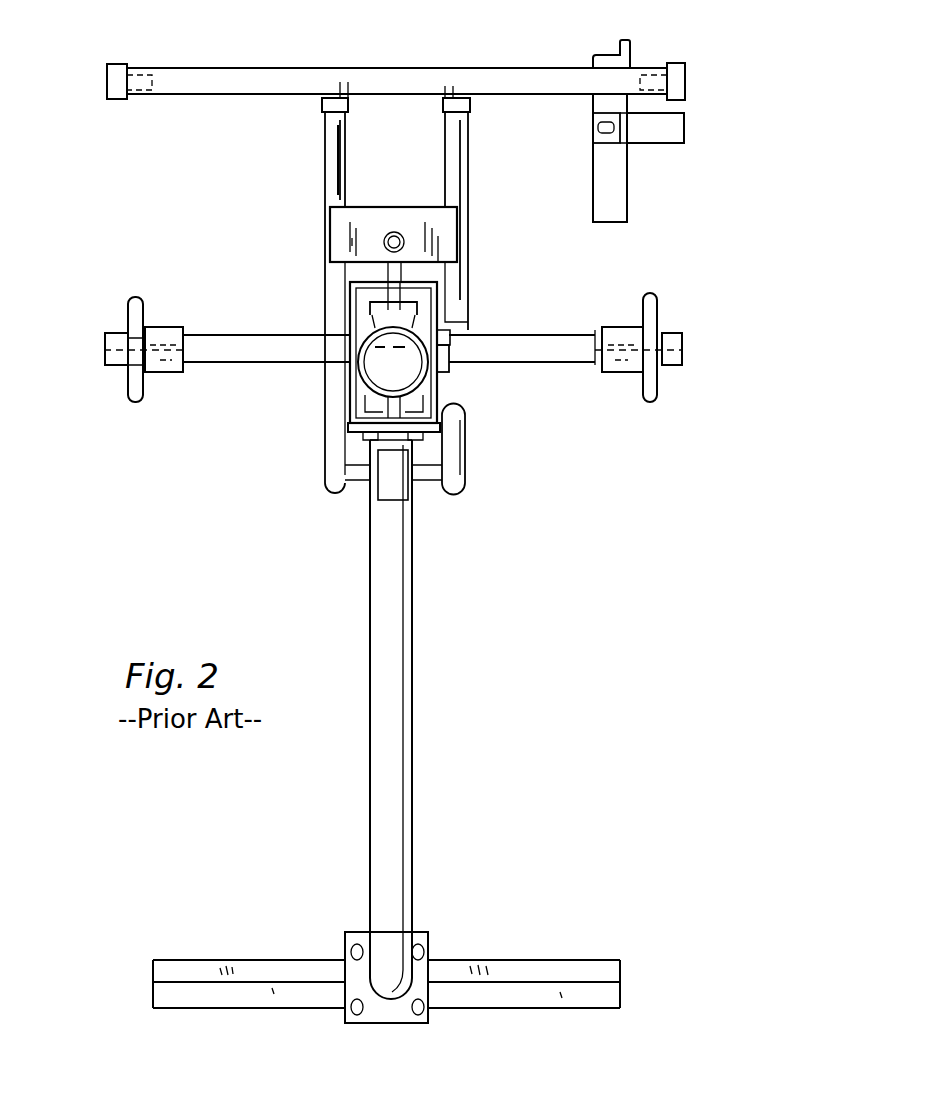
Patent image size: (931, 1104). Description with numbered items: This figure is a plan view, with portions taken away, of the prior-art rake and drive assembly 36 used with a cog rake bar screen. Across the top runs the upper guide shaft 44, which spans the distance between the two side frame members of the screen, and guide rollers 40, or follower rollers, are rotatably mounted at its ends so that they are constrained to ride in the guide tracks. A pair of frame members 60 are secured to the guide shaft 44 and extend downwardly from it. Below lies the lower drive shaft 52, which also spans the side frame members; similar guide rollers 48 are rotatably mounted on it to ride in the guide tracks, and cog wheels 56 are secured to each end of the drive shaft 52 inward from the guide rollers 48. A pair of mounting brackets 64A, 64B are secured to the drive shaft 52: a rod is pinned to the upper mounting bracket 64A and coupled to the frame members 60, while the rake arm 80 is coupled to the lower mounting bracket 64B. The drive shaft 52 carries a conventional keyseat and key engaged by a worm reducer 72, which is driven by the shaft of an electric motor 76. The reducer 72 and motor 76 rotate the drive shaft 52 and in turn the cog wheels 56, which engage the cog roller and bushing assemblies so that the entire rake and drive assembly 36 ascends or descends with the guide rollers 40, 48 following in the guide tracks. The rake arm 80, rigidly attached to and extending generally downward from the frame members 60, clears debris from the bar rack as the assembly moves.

The rake and drive assembly 36 is at (203, 52).
The upper guide shaft 44 is at (288, 76).
The guide rollers 40 is at (117, 97).
The frame members 60 is at (453, 148).
The worm reducer 72 is at (368, 322).
The electric motor 76 is at (385, 364).
The upper mounting bracket 64A is at (440, 330).
The lower mounting bracket 64B is at (440, 395).
The lower drive shaft 52 is at (255, 343).
The guide rollers 48 is at (105, 340).
The cog wheels 56 is at (135, 390).
The rake arm 80 is at (395, 591).